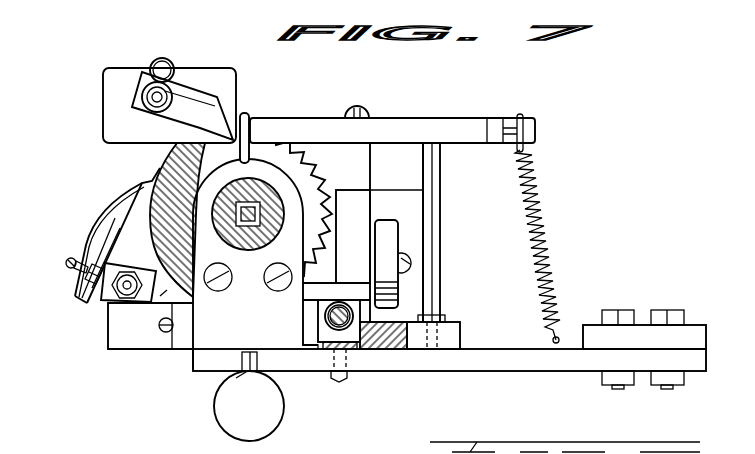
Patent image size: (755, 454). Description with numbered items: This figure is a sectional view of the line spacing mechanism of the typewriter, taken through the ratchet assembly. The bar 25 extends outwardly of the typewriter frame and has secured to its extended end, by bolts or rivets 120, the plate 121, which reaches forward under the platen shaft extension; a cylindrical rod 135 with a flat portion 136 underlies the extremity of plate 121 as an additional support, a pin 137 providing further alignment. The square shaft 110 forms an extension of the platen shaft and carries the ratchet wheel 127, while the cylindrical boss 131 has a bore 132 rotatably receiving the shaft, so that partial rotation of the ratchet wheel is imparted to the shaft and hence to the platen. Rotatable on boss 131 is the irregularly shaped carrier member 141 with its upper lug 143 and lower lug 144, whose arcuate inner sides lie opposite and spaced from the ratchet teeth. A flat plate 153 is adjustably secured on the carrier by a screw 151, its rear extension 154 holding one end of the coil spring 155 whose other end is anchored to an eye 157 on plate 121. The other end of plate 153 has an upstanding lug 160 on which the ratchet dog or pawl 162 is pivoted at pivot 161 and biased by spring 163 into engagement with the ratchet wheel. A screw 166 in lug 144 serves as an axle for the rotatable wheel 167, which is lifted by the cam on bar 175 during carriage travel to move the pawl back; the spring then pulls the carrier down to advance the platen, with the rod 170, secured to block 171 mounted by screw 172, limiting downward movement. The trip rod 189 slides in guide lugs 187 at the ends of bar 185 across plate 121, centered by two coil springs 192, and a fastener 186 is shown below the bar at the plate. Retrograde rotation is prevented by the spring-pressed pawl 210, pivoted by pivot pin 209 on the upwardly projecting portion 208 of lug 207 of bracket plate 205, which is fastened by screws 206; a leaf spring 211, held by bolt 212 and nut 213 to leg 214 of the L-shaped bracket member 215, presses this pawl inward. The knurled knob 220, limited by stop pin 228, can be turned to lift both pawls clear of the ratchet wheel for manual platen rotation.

The plate or bar 25 is at (692, 332).
The square shaft 110 is at (253, 217).
The bolts or rivets 120 is at (655, 315).
The plate 121 is at (507, 362).
The ratchet wheel 127 is at (318, 218).
The cylindrical boss 131 is at (262, 204).
The cylindrical bores 132 is at (259, 250).
The cylindrical rod 135 is at (272, 427).
The flat portion 136 is at (237, 377).
The pin 137 is at (248, 360).
The irregularly shaped member 141 is at (373, 210).
The upper lug 143 is at (368, 152).
The lower lug 144 is at (350, 257).
The screw 151 is at (357, 110).
The flat plate or bar 153 is at (427, 128).
The extension 154 is at (510, 127).
The coil spring 155 is at (542, 192).
The eye 157 is at (556, 342).
The upstanding lug 160 is at (215, 80).
The pivot 161 is at (155, 97).
The ratchet dog or pawl 162 is at (208, 112).
The spring 163 is at (170, 58).
The screw 166 is at (405, 257).
The rotatable wheel 167 is at (392, 285).
The vertically extending rod 170 is at (442, 170).
The block 171 is at (457, 333).
The screw 172 is at (442, 317).
The bar 175 is at (393, 340).
The bar 185 is at (350, 350).
The nut 186 is at (335, 379).
The guide lugs 187 is at (323, 346).
The spring pressed rod 189 is at (323, 327).
The coil springs 192 is at (328, 313).
The bracket plate 205 is at (177, 342).
The screws 206 is at (163, 337).
The lug 207 is at (117, 330).
The upwardly projecting portion 208 is at (100, 306).
The pivot pin 209 is at (108, 315).
The spring-pressed pawl 210 is at (135, 220).
The leaf spring 211 is at (100, 207).
The bolt 212 is at (66, 266).
The nut 213 is at (82, 303).
The leg 214 is at (88, 252).
The L-shaped bracket member 215 is at (100, 248).
The knurled knob 220 is at (167, 290).
The stop pin 228 is at (252, 118).